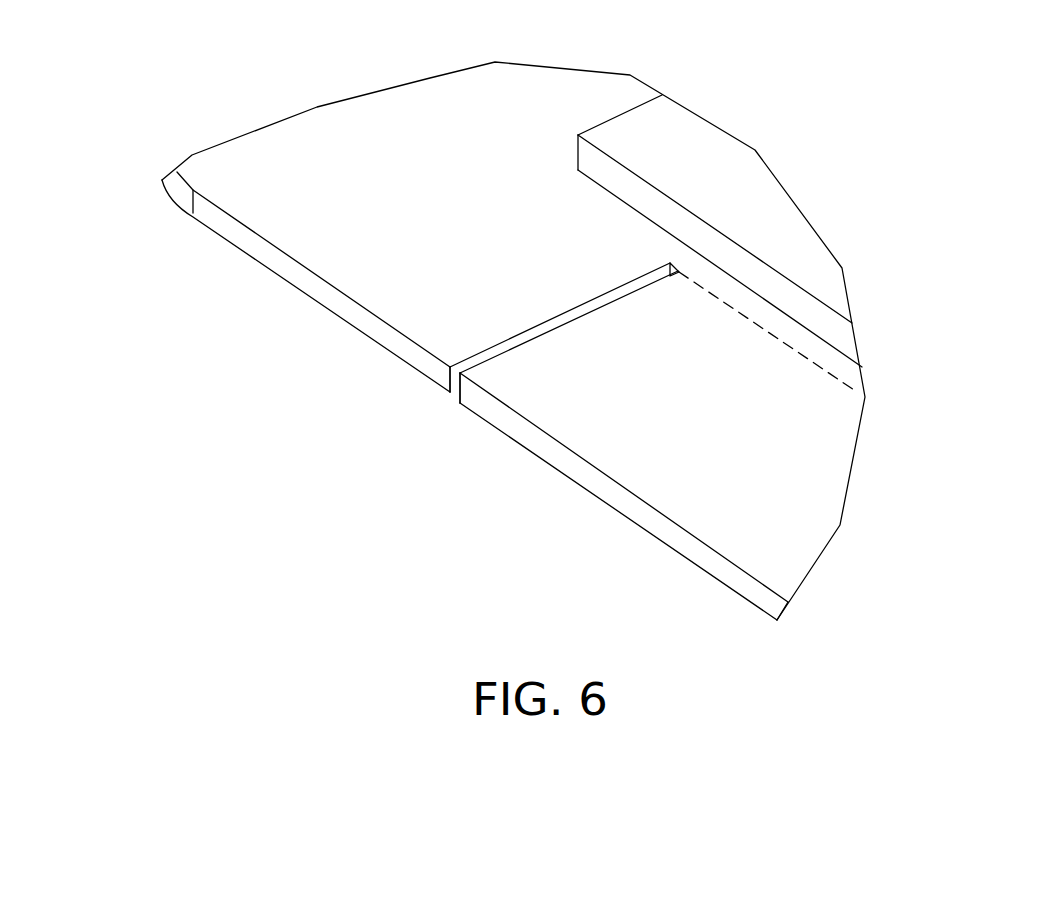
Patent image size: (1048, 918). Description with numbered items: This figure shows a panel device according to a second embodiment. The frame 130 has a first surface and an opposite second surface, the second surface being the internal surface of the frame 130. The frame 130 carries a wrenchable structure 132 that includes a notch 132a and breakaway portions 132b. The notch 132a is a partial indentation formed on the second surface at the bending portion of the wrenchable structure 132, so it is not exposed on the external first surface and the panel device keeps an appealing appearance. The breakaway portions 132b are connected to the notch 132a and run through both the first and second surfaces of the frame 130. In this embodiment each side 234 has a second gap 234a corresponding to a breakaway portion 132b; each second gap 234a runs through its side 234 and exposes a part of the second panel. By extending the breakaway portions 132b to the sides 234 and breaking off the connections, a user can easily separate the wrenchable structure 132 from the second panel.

The frame 130 is at (363, 130).
The wrenchable structure 132 is at (736, 409).
The notch 132a is at (778, 338).
The breakaway portions 132b is at (580, 322).
The side 234 is at (640, 507).
The second gap 234a is at (453, 398).